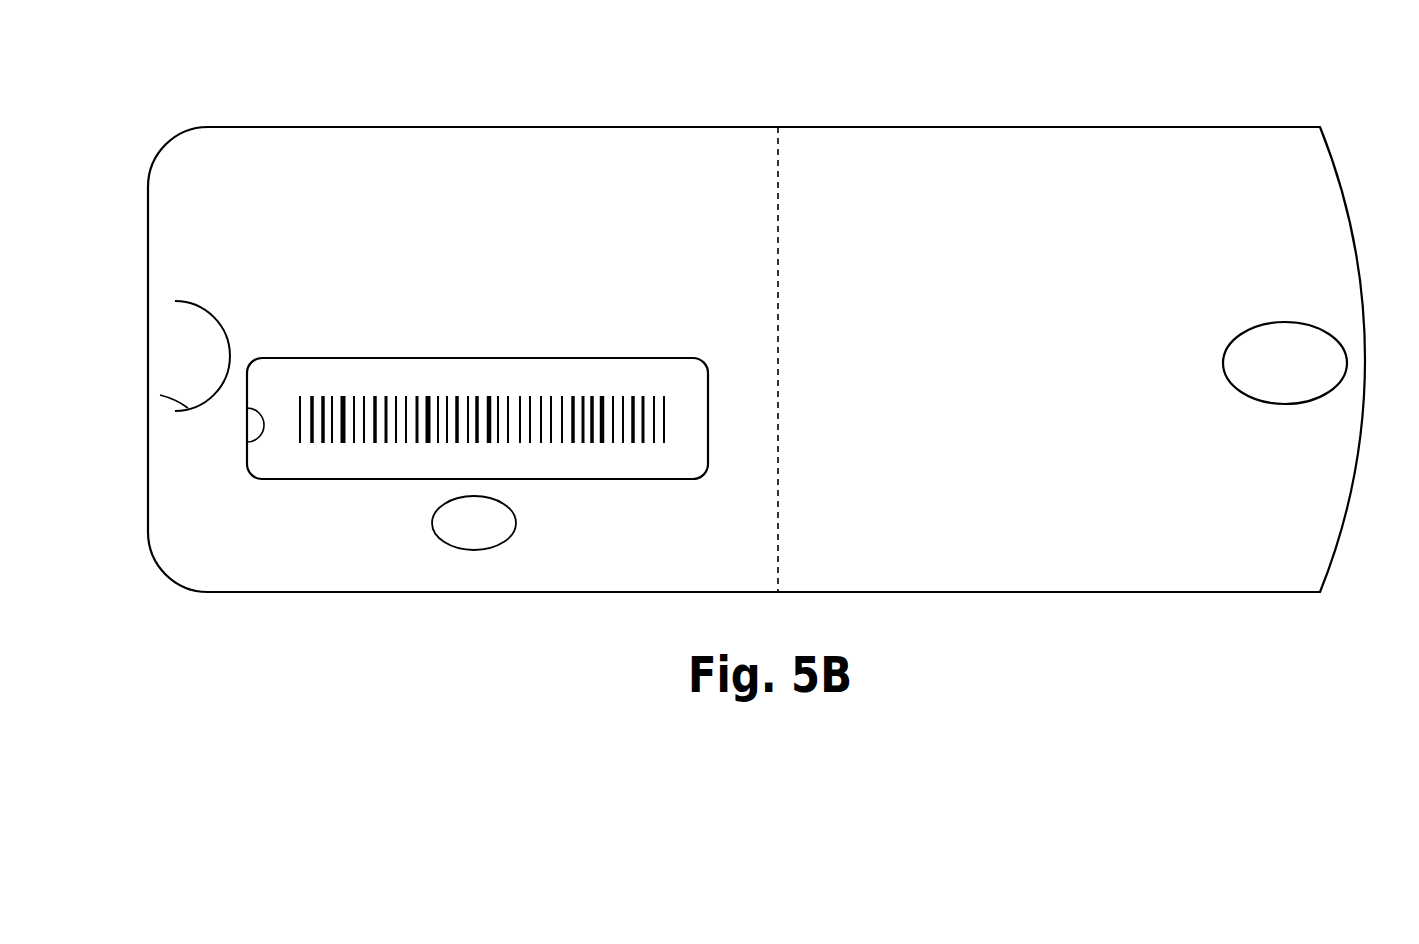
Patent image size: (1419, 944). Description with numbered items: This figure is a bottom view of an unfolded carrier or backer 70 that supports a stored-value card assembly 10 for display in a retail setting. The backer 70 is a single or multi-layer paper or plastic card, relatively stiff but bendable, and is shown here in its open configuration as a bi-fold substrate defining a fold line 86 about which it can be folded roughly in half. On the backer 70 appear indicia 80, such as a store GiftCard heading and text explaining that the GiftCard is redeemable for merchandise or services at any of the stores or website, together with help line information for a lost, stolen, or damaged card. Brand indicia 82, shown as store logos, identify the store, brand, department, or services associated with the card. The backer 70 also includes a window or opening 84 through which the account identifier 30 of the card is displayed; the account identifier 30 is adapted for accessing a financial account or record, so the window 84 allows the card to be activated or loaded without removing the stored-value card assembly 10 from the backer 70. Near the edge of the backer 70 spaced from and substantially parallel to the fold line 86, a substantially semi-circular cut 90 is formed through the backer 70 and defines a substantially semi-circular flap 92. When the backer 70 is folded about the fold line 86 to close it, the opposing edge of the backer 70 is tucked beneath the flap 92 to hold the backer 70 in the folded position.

The stored-value card assembly 10 is at (277, 458).
The account identifier 30 is at (341, 440).
The backer 70 is at (1153, 98).
The indicia 80 is at (556, 172).
The brand indicia 82 is at (1337, 365).
The window 84 is at (250, 441).
The fold line 86 is at (778, 158).
The semi-circular cut 90 is at (188, 408).
The semi-circular flap 92 is at (212, 347).